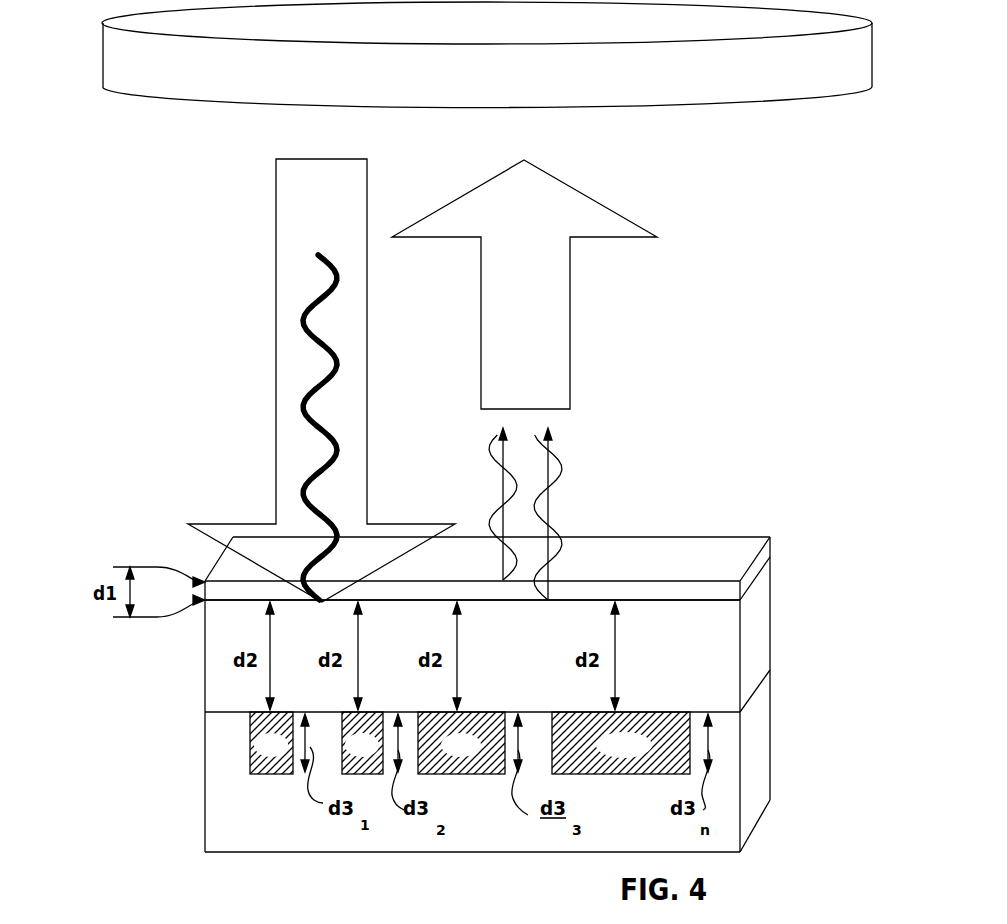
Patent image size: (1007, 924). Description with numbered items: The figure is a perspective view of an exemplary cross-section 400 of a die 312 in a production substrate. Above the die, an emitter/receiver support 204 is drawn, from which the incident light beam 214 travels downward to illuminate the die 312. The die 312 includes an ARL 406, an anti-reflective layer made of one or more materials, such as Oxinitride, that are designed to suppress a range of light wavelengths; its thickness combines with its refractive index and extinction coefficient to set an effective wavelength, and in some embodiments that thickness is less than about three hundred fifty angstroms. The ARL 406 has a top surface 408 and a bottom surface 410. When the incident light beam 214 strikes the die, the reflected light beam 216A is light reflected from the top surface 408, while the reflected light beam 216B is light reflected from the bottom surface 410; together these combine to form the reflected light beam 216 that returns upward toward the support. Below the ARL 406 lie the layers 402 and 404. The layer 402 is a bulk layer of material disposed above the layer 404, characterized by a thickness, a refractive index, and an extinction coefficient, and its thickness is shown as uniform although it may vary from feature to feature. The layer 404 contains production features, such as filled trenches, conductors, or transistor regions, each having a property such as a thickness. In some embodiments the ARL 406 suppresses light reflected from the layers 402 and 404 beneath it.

The emitter/receiver support 204 is at (258, 91).
The incident light beam 214 is at (302, 325).
The reflected light beam 216 is at (562, 287).
The reflected light beam 216A is at (490, 440).
The reflected light beam 216B is at (563, 440).
The cross-section 400 is at (728, 452).
The layer 402 is at (747, 633).
The layer 404 is at (747, 733).
The ARL 406 is at (757, 560).
The top surface 408 is at (603, 580).
The die 312 is at (722, 568).
The bottom surface 410 is at (647, 601).